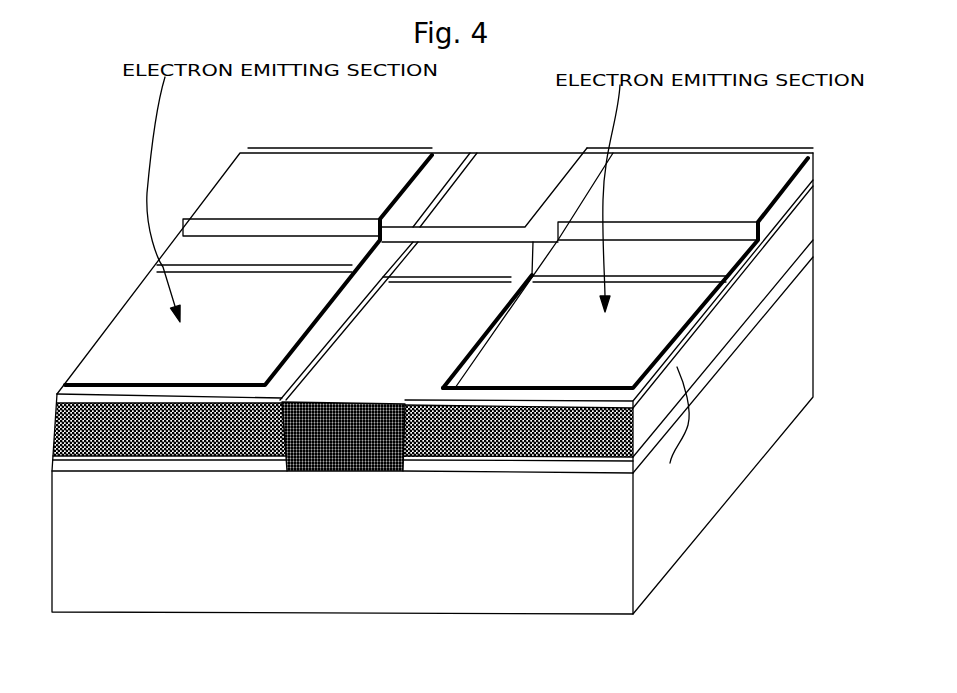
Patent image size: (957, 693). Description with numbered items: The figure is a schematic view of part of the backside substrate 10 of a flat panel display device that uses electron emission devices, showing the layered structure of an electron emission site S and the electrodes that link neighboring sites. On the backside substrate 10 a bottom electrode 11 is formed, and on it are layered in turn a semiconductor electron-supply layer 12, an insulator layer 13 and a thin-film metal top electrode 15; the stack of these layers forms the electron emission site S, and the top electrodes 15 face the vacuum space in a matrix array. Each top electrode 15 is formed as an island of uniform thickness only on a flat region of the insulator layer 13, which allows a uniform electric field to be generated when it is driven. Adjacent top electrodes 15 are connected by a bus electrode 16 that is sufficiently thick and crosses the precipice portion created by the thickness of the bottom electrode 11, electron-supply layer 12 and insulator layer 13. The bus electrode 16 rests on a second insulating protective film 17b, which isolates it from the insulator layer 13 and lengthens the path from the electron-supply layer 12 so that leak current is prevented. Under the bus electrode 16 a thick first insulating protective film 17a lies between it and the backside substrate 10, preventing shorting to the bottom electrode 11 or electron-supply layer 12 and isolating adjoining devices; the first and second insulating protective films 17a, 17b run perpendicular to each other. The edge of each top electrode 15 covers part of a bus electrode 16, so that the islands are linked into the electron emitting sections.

The backside substrate 10 is at (423, 605).
The bottom electrode 11 is at (168, 465).
The electron-supply layer 12 is at (113, 430).
The insulator layer 13 is at (73, 393).
The thin-film metal electrode 15 is at (283, 190).
The bus electrode 16 is at (545, 172).
The first insulating protective film 17a is at (410, 337).
The second insulating protective film 17b is at (465, 267).
The electron emission site S is at (704, 424).